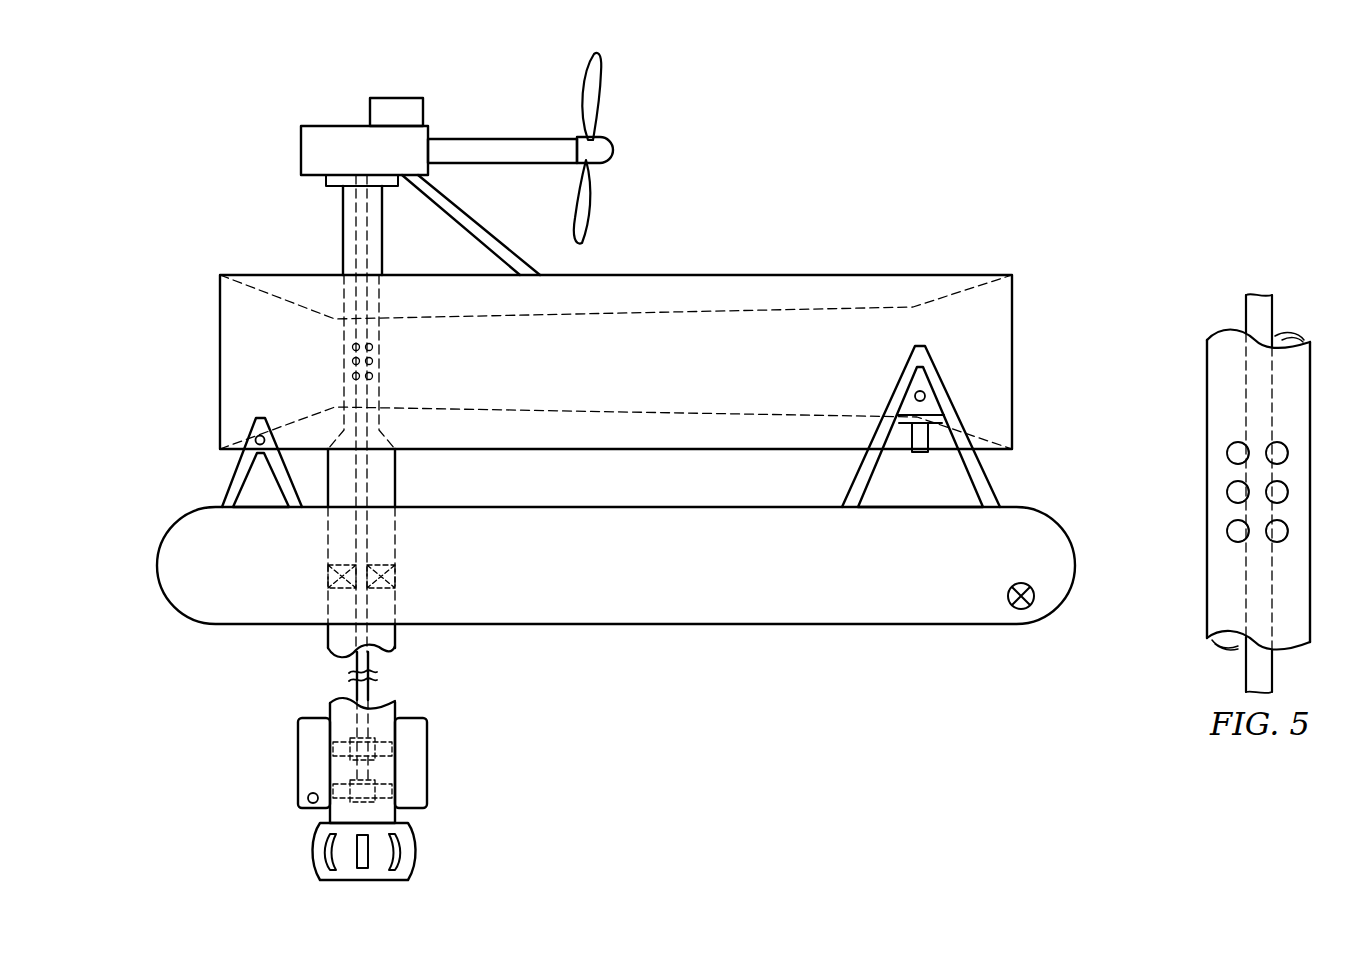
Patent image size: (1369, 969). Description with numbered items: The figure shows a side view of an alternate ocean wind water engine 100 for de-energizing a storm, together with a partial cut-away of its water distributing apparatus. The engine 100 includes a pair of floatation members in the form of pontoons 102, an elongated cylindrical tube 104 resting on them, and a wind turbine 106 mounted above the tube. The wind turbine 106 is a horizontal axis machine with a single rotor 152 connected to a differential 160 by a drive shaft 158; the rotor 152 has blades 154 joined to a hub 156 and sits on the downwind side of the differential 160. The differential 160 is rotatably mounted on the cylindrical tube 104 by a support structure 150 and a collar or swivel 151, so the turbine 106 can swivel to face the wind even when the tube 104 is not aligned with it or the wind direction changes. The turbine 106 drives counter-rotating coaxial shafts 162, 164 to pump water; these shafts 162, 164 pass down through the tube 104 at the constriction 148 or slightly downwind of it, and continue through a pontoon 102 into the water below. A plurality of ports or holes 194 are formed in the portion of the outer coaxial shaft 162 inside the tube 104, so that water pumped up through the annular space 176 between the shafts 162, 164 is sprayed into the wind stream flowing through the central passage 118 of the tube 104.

In FIG. 4, the ocean wind water engine 100 is at (922, 185).
In FIG. 4, the pontoons 102 is at (723, 626).
In FIG. 4, the elongated cylindrical tube 104 is at (813, 276).
In FIG. 4, the wind turbine 106 is at (686, 95).
In FIG. 4, the central passage 118 is at (652, 373).
In FIG. 4, the constriction 148 is at (322, 402).
In FIG. 4, the support structure 150 is at (488, 232).
In FIG. 4, the collar or swivel 151 is at (333, 188).
In FIG. 4, the rotor 152 is at (628, 140).
In FIG. 4, the blades 154 is at (601, 88).
In FIG. 4, the hub 156 is at (615, 158).
In FIG. 4, the drive shaft 158 is at (505, 138).
In FIG. 4, the differential 160 is at (333, 125).
In FIG. 4, the outer coaxial shaft 162 is at (328, 638).
In FIG. 5, the outer coaxial shaft 162 is at (1207, 387).
In FIG. 4, the inner shaft 164 is at (367, 603).
In FIG. 5, the inner shaft 164 is at (1245, 312).
In FIG. 4, the annular space 176 is at (380, 658).
In FIG. 4, the ports or holes 194 is at (348, 361).
In FIG. 5, the ports or holes 194 is at (1228, 453).